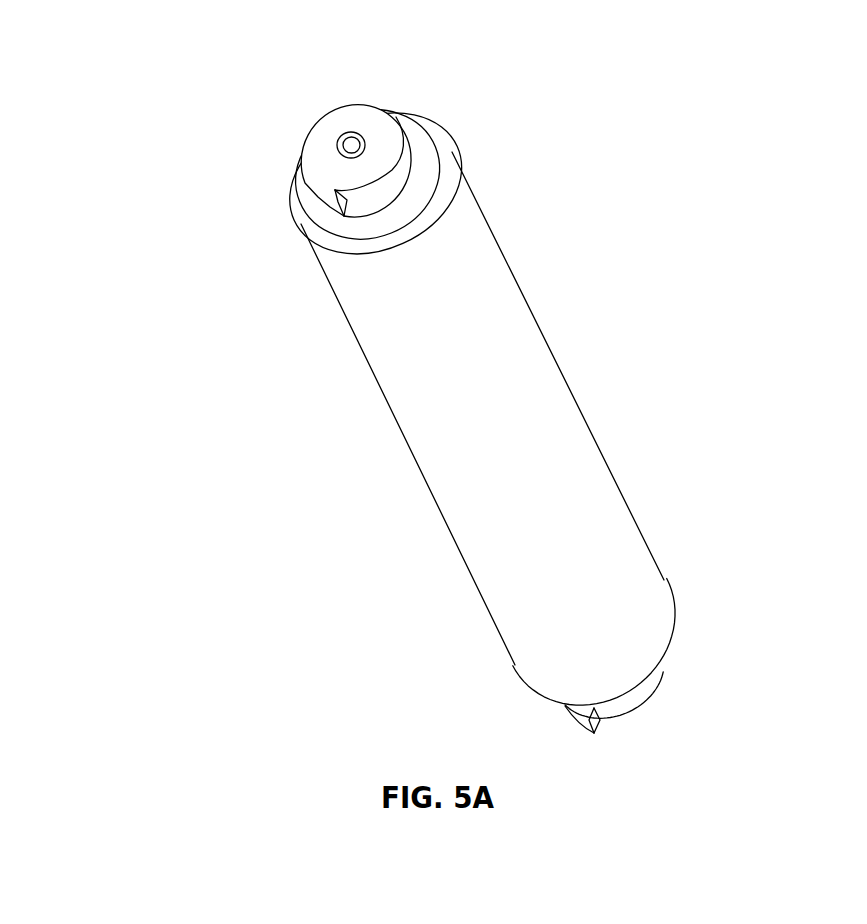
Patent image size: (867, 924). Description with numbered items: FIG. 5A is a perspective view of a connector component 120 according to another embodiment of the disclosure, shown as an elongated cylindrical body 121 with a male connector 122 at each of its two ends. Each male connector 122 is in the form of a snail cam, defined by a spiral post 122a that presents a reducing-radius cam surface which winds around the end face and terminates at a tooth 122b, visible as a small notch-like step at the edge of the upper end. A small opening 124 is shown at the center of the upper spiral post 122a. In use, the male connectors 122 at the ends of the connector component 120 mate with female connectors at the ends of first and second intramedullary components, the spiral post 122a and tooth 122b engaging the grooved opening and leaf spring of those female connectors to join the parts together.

The connector component 120 is at (143, 56).
The cylindrical housing body 121 is at (539, 289).
The male connector 122 is at (393, 99).
The spiral post 122a is at (380, 193).
The tooth 122b is at (327, 202).
The port opening 124 is at (348, 158).